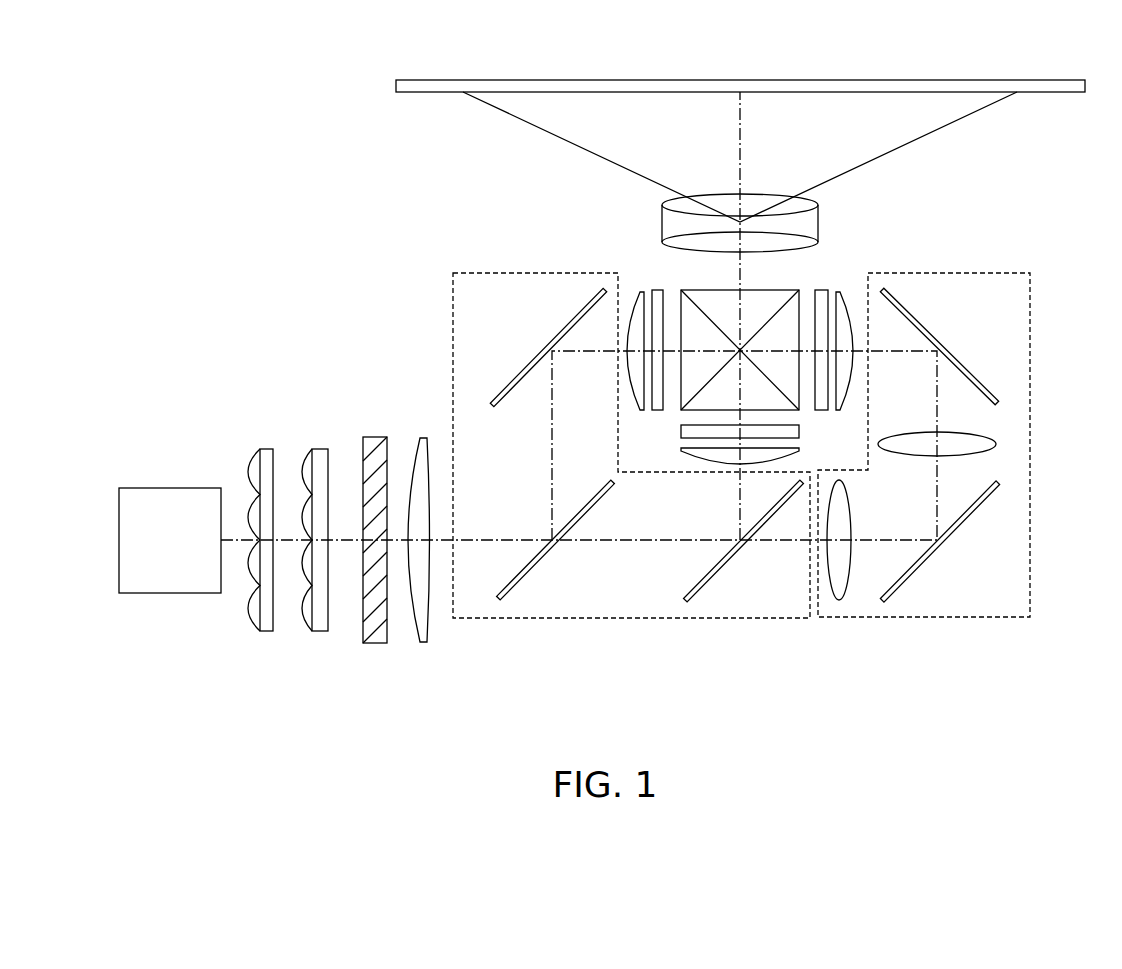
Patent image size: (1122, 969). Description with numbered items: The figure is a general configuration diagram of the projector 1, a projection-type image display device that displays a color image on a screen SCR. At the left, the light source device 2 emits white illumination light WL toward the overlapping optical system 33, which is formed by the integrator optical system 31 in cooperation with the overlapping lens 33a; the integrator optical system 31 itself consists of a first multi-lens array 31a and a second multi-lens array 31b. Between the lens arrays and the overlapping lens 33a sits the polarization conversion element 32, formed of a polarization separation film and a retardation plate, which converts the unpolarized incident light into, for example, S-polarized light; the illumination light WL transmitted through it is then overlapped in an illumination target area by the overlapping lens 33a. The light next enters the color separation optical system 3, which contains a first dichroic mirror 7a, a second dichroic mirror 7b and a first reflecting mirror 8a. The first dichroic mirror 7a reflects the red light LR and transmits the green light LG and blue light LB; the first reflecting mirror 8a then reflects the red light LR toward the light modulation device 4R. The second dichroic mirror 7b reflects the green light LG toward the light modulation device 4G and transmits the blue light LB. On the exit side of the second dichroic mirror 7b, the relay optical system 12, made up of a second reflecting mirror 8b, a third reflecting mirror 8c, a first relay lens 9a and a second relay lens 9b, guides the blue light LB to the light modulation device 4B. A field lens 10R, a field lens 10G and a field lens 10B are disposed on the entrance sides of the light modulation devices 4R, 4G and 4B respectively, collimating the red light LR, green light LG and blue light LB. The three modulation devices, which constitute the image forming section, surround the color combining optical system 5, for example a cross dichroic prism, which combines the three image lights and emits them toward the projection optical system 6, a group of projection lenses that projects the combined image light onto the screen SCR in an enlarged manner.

The projector 1 is at (1026, 221).
The light source device 2 is at (172, 594).
The color separation optical system 3 is at (452, 398).
The light modulation device for red light 4R is at (655, 290).
The light modulation device for green light 4G is at (681, 431).
The light modulation device for blue light 4B is at (822, 290).
The color combining optical system 5 is at (758, 299).
The projection optical system 6 is at (728, 205).
The first dichroic mirror 7a is at (521, 573).
The second dichroic mirror 7b is at (724, 571).
The first reflecting mirror 8a is at (530, 362).
The second reflecting mirror 8b is at (960, 530).
The third reflecting mirror 8c is at (962, 368).
The first relay lens 9a is at (827, 557).
The second relay lens 9b is at (990, 437).
The field lens 10R is at (632, 292).
The field lens 10G is at (690, 454).
The field lens 10B is at (846, 292).
The relay optical system 12 is at (945, 618).
The integrator optical system 31 is at (287, 591).
The first multi-lens array 31a is at (270, 632).
The second multi-lens array 31b is at (312, 570).
The polarization conversion element 32 is at (374, 437).
The overlapping optical system 33 is at (347, 564).
The overlapping lens 33a is at (427, 584).
The screen SCR is at (1055, 93).
The illumination light WL is at (530, 527).
The red light LR is at (552, 445).
The green light LG is at (740, 503).
The blue light LB is at (937, 490).